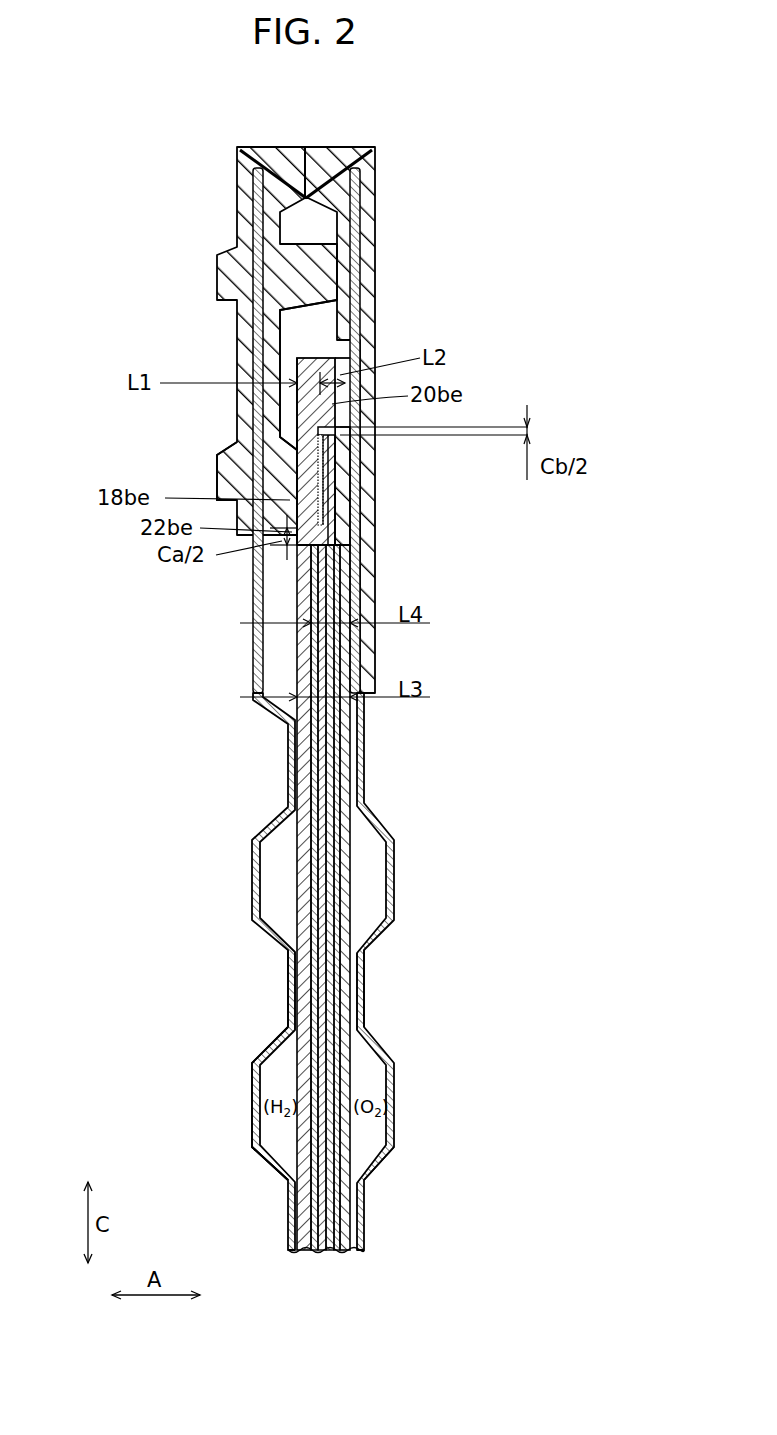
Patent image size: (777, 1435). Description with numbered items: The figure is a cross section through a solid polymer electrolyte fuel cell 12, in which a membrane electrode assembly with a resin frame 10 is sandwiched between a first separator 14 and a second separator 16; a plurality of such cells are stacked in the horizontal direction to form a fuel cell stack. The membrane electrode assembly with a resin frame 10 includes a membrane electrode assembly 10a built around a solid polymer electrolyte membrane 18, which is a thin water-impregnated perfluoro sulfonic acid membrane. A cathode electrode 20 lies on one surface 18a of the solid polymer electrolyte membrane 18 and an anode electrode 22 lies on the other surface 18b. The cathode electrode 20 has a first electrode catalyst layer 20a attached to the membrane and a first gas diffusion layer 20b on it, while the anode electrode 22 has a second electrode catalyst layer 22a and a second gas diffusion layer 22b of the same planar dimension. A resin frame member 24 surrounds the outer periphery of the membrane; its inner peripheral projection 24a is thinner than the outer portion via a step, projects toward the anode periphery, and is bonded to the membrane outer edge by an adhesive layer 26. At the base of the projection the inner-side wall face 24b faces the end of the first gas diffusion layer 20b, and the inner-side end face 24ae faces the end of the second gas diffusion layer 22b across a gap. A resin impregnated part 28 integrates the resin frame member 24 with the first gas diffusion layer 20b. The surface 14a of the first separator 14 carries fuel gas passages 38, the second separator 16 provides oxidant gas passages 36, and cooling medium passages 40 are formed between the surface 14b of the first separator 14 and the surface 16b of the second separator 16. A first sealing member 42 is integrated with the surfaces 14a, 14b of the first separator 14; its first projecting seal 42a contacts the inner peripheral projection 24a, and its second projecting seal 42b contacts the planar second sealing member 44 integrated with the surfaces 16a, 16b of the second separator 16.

The membrane electrode assembly with a resin frame 10 is at (320, 1262).
The membrane electrode assembly 10a is at (525, 735).
The solid polymer electrolyte fuel cell 12 is at (384, 84).
The first separator 14 is at (268, 1053).
The surface of the first separator 14a is at (304, 985).
The surface of the first separator 14b is at (290, 1005).
The second separator 16 is at (380, 1053).
The surface of the second separator 16a is at (337, 985).
The surface of the second separator 16b is at (362, 1005).
The solid polymer electrolyte membrane 18 is at (328, 830).
The surface of the solid polymer electrolyte membrane 18a is at (330, 1222).
The surface of the solid polymer electrolyte membrane 18b is at (325, 1213).
The cathode electrode 20 is at (477, 850).
The first electrode catalyst layer 20a is at (337, 908).
The first gas diffusion layer 20b is at (345, 859).
The anode electrode 22 is at (477, 735).
The second electrode catalyst layer 22a is at (315, 801).
The second gas diffusion layer 22b is at (305, 746).
The resin frame member 24 is at (353, 357).
The inner peripheral projection 24a is at (298, 476).
The inner-side end face of the inner peripheral projection 24ae is at (345, 520).
The inner-side wall face 24b is at (350, 440).
The adhesive layer 26 is at (335, 527).
The resin impregnated part 28 is at (340, 470).
The oxidant gas passage 36 is at (373, 1152).
The fuel gas passages 38 is at (275, 1152).
The cooling medium passages 40 is at (290, 735).
The first sealing member 42 is at (236, 147).
The first projecting seal 42a is at (290, 445).
The second projecting seal 42b is at (305, 322).
The second sealing member 44 is at (377, 148).